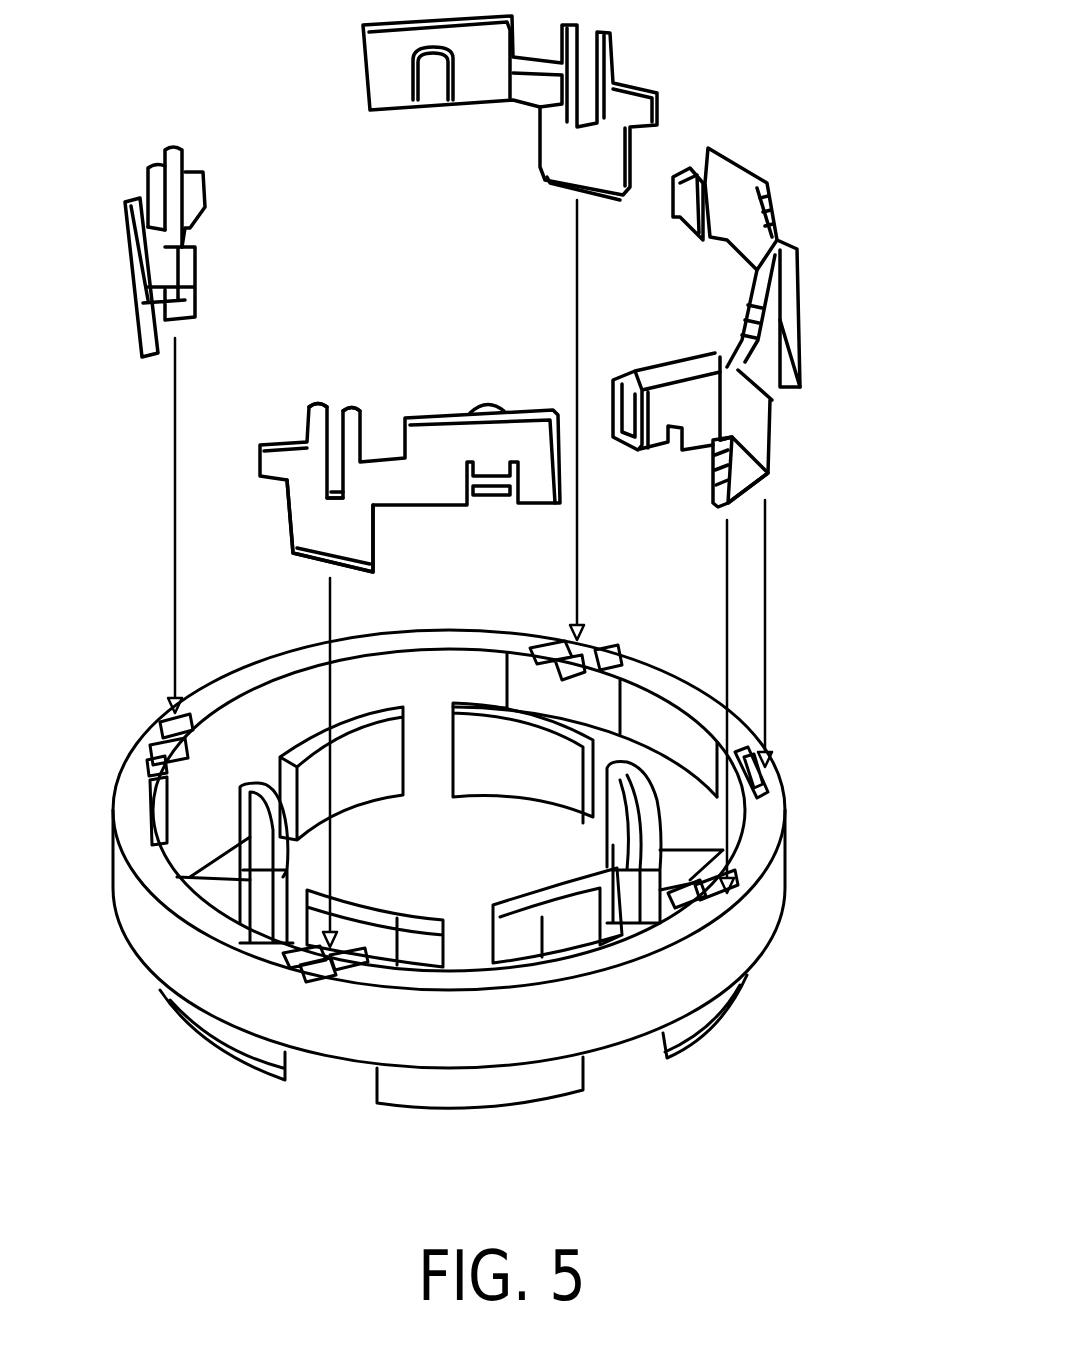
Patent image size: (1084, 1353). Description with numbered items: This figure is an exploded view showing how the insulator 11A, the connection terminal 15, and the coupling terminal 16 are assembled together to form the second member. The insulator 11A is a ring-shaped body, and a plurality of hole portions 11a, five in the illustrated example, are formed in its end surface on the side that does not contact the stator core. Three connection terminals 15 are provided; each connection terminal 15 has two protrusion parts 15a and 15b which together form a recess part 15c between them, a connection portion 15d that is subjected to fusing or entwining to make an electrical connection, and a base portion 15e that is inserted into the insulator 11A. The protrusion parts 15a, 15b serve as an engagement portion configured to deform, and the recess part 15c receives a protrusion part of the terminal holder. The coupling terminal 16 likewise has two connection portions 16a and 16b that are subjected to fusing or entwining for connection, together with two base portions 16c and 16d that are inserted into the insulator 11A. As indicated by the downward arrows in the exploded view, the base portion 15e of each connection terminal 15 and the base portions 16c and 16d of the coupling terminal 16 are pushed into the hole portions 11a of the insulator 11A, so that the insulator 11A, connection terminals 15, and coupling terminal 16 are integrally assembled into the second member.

The insulator 11A is at (765, 900).
The hole portion 11a is at (302, 978).
The connection terminal 15 is at (262, 442).
The protrusion part 15a is at (318, 402).
The protrusion part 15b is at (350, 406).
The recess part 15c is at (334, 400).
The connection portion 15d is at (487, 400).
The base portion 15e is at (326, 528).
The coupling terminal 16 is at (790, 308).
The connection portion 16a is at (627, 378).
The connection portion 16b is at (680, 210).
The base portion 16c is at (750, 460).
The base portion 16d is at (790, 380).